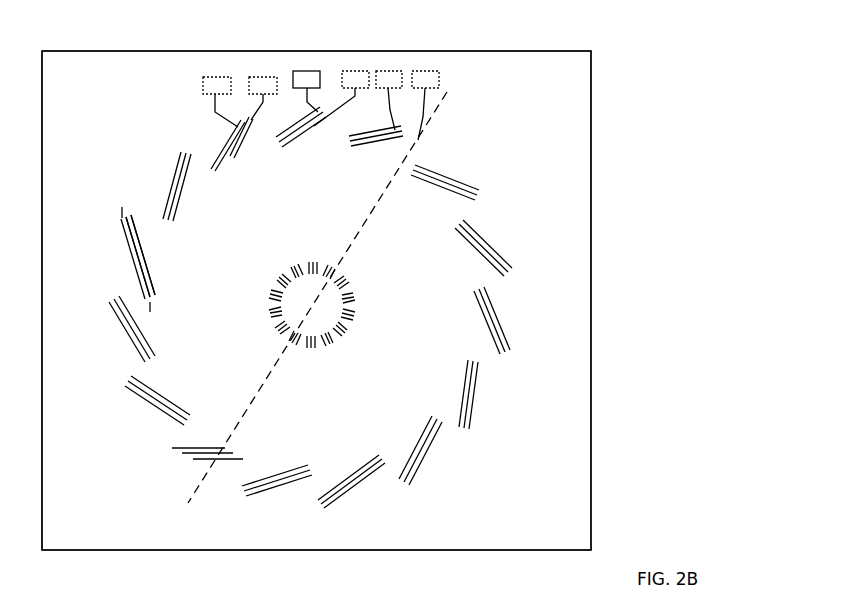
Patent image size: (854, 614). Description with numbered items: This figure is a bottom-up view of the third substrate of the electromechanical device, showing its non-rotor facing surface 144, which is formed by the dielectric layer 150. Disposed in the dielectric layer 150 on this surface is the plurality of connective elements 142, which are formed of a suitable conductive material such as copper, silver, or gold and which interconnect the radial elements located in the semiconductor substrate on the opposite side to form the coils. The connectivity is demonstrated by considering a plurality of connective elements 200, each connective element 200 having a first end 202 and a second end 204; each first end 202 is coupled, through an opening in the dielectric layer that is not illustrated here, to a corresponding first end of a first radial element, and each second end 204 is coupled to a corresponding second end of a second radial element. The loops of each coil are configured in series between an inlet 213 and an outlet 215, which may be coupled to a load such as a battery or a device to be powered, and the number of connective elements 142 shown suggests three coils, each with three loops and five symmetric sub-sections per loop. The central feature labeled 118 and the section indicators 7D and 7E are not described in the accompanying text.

The dielectric layer 150 is at (591, 332).
The non-rotor facing surface 144 is at (556, 83).
The inlet 213 is at (215, 77).
The outlet 215 is at (257, 77).
The connective elements 142 is at (490, 226).
The second end 204 is at (129, 198).
The connective elements 200 is at (163, 254).
The first end 202 is at (161, 282).
The central core 118 is at (312, 306).
The section line 7D is at (447, 92).
The section line 7E is at (122, 212).